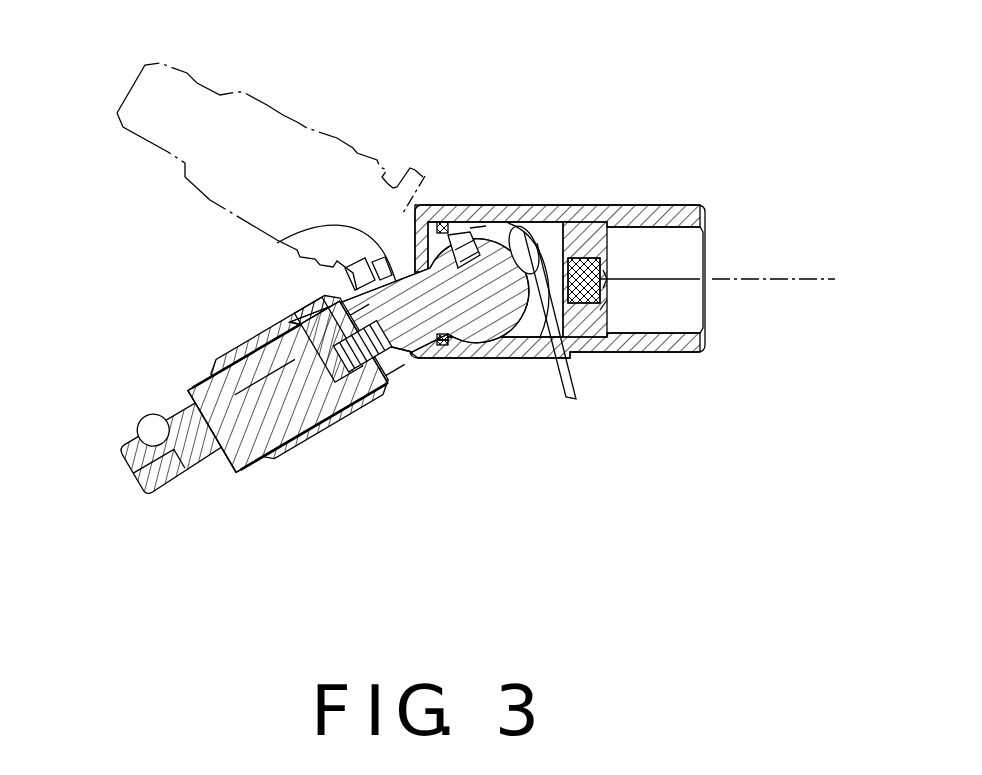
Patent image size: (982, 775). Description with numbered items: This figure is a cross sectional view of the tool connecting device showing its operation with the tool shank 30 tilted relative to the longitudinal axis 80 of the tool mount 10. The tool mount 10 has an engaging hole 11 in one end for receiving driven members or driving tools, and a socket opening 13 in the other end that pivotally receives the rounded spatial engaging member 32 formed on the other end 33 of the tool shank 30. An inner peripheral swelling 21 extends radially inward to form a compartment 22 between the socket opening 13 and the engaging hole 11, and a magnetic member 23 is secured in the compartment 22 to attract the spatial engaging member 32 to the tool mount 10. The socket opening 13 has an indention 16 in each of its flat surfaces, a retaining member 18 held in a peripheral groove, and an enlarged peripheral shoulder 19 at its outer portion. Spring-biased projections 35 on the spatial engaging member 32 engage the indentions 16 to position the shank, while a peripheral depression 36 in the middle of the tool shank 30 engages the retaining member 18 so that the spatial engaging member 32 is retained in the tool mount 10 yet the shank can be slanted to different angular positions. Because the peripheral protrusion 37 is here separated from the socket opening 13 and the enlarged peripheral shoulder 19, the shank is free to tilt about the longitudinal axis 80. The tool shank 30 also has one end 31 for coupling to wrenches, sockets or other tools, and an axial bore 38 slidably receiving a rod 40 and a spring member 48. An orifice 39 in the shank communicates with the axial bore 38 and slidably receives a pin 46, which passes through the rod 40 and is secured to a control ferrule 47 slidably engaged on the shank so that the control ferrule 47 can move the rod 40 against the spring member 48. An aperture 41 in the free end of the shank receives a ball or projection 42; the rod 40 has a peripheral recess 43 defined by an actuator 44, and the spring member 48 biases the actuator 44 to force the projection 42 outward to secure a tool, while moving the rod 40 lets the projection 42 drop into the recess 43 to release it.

The tool mount 10 is at (654, 350).
The engaging hole 11 is at (683, 255).
The socket opening 13 is at (484, 230).
The indention 16 is at (561, 336).
The retaining member 18 is at (448, 345).
The enlarged peripheral shoulder 19 is at (427, 212).
The inner peripheral swelling 21 is at (587, 315).
The compartment 22 is at (604, 293).
The magnetic member 23 is at (590, 262).
The tool shank 30 is at (252, 432).
The one end 31 is at (150, 503).
The spatial engaging member 32 is at (484, 313).
The other end 33 is at (479, 225).
The spring-biased projection 35 is at (449, 228).
The peripheral depression 36 is at (277, 242).
The peripheral protrusion 37 is at (418, 365).
The axial bore 38 is at (248, 390).
The orifice 39 is at (310, 332).
The rod 40 is at (292, 430).
The aperture 41 is at (154, 428).
The projection 42 is at (146, 424).
The peripheral recess 43 is at (122, 440).
The actuator 44 is at (205, 470).
The pin 46 is at (332, 400).
The control ferrule 47 is at (247, 455).
The spring member 48 is at (380, 382).
The longitudinal axis 80 is at (805, 279).